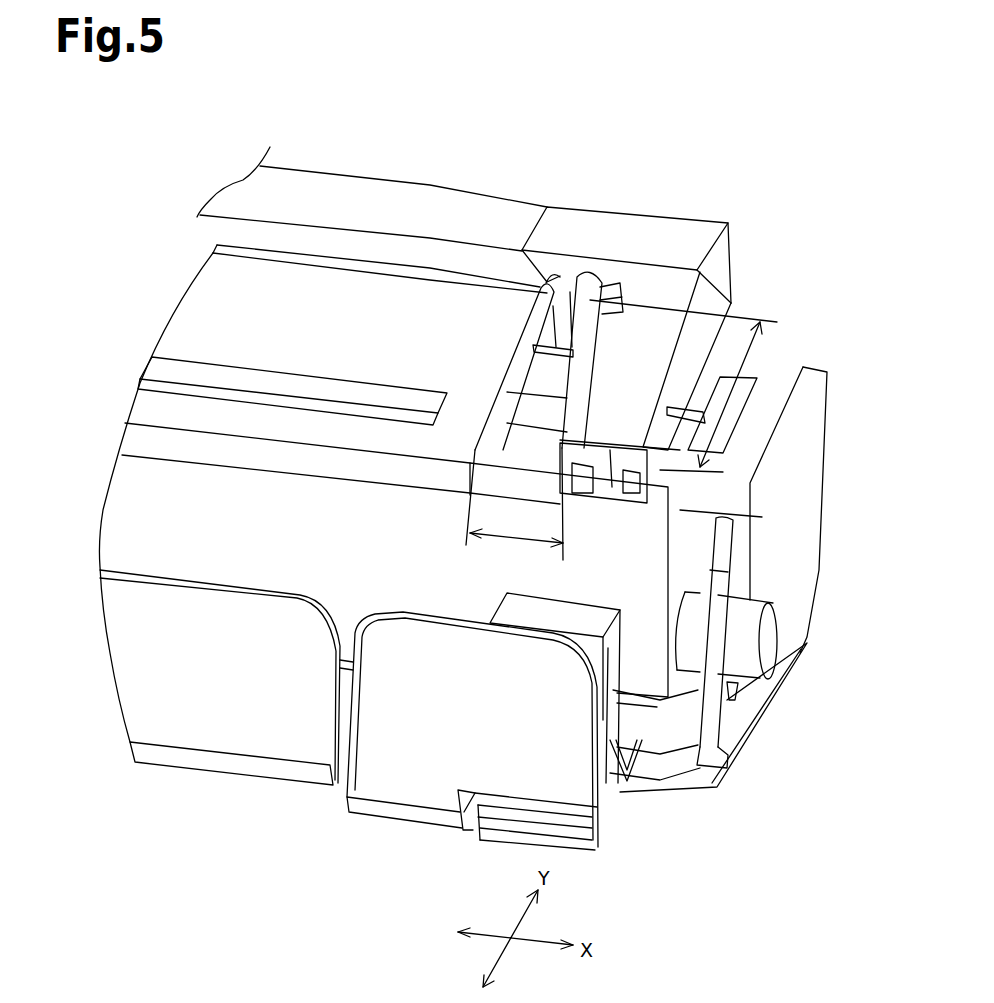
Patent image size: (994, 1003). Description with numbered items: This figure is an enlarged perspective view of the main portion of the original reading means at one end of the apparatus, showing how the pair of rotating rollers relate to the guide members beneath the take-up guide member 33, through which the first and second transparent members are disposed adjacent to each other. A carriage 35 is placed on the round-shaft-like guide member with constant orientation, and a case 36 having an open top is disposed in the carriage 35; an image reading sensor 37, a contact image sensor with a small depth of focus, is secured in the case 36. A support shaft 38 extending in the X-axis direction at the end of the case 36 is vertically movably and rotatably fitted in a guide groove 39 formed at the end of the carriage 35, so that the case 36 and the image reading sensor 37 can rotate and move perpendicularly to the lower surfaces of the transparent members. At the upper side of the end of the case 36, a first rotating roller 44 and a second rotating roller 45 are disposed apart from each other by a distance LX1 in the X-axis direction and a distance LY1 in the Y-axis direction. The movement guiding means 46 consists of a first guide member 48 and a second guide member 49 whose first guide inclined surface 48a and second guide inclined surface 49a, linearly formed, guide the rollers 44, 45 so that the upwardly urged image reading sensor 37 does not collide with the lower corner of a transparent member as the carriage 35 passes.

The take-up guide member 33 is at (317, 202).
The carriage 35 is at (737, 727).
The case 36 is at (265, 565).
The image reading sensor 37 is at (223, 380).
The support shaft 38 is at (772, 640).
The guide groove 39 is at (740, 570).
The first rotating roller 44 is at (612, 477).
The second rotating roller 45 is at (550, 322).
The movement guiding means 46 is at (639, 289).
The first guide member 48 is at (660, 265).
The first guide inclined surface 48a is at (712, 338).
The second guide member 49 is at (620, 207).
The second guide inclined surface 49a is at (553, 272).
The distance in the X-axis direction LX1 is at (514, 507).
The distance in the Y-axis direction LY1 is at (694, 386).